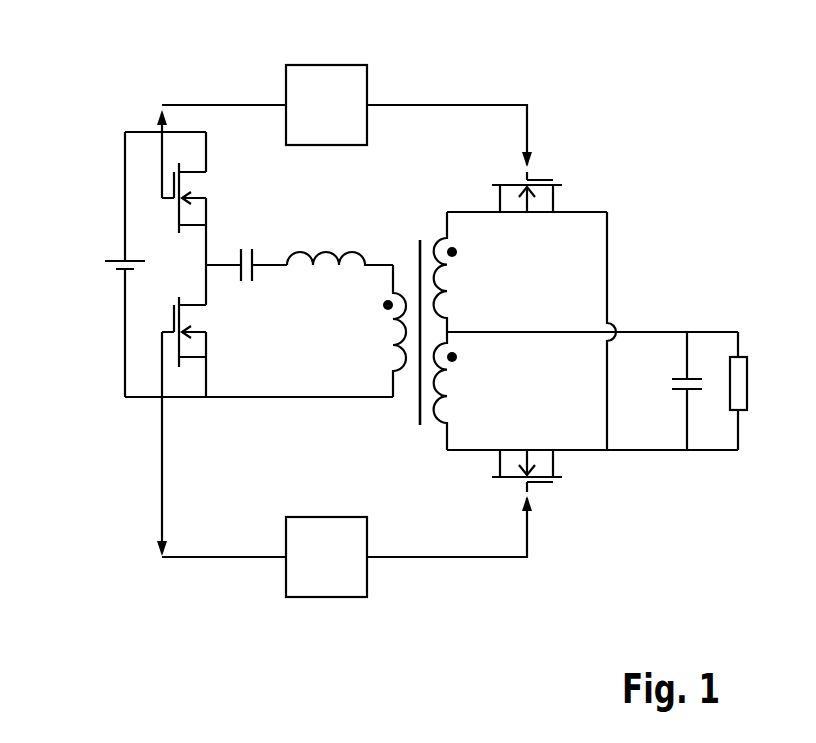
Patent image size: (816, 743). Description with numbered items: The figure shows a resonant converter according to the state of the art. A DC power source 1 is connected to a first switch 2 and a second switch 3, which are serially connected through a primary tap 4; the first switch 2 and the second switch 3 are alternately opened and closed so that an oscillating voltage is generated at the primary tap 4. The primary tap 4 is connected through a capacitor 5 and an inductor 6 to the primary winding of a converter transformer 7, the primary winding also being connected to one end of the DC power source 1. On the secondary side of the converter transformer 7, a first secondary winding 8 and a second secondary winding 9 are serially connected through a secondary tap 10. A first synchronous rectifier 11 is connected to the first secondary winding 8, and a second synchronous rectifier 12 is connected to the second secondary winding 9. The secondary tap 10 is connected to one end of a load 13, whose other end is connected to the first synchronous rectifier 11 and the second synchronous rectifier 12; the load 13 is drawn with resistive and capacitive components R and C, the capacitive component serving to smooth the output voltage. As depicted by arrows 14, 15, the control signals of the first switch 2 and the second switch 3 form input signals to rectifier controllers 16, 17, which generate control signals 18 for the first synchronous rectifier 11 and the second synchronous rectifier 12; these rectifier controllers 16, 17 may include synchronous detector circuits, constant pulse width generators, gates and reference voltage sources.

The DC power source 1 is at (113, 258).
The first switch 2 is at (172, 203).
The second switch 3 is at (167, 315).
The primary tap 4 is at (205, 262).
The capacitor 5 is at (245, 223).
The inductor 6 is at (313, 242).
The converter transformer 7 is at (416, 240).
The first secondary winding 8 is at (453, 275).
The second secondary winding 9 is at (450, 385).
The secondary tap 10 is at (453, 333).
The first synchronous rectifier 11 is at (545, 173).
The second synchronous rectifier 12 is at (550, 490).
The load 13 is at (717, 435).
The arrow 14 is at (158, 160).
The arrow 15 is at (162, 445).
The rectifier controller 16 is at (300, 80).
The rectifier controller 17 is at (345, 585).
The control signal 18 is at (457, 101).